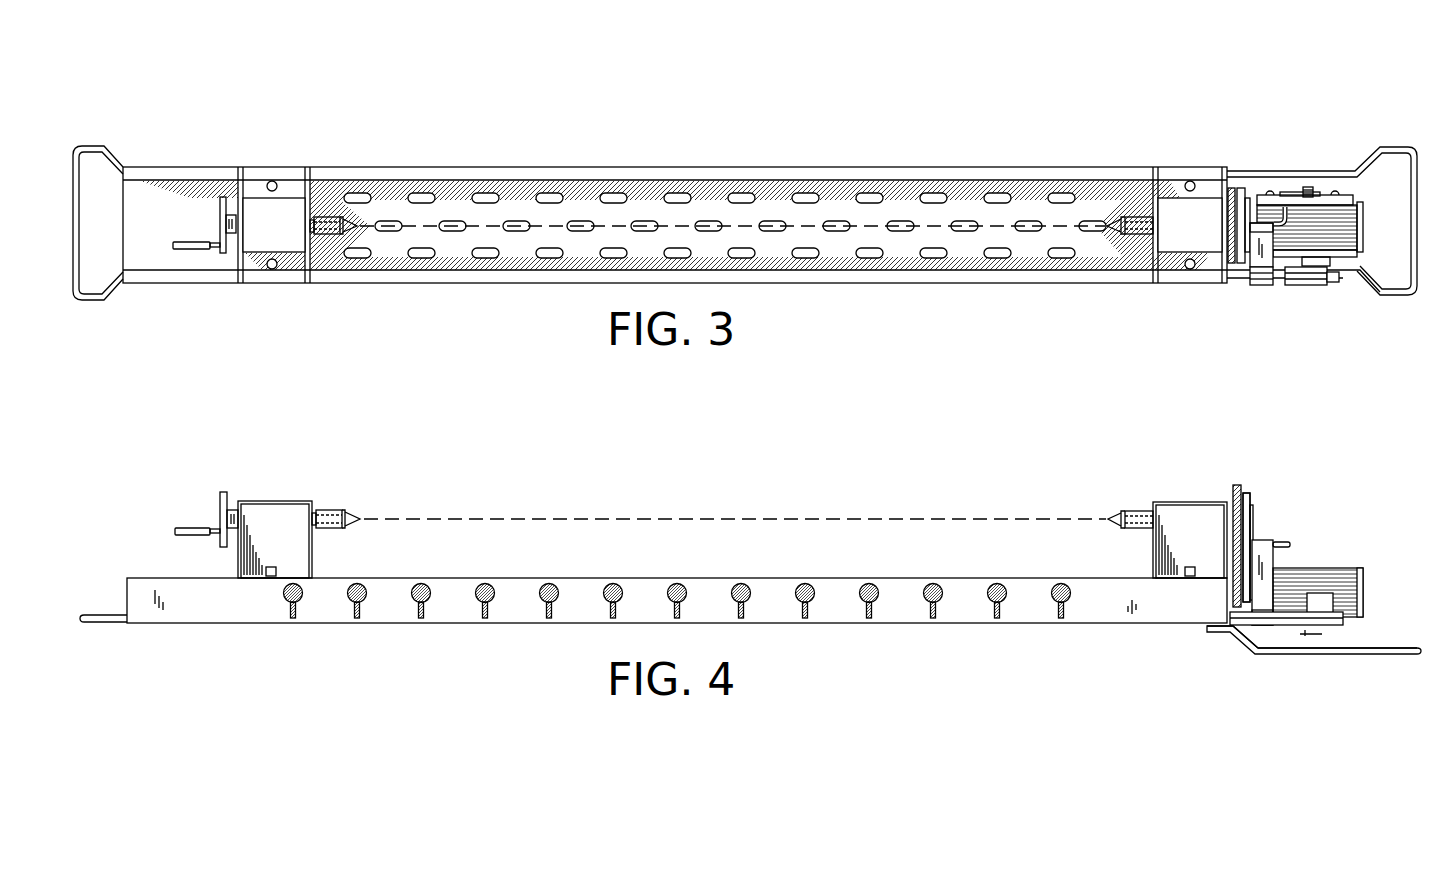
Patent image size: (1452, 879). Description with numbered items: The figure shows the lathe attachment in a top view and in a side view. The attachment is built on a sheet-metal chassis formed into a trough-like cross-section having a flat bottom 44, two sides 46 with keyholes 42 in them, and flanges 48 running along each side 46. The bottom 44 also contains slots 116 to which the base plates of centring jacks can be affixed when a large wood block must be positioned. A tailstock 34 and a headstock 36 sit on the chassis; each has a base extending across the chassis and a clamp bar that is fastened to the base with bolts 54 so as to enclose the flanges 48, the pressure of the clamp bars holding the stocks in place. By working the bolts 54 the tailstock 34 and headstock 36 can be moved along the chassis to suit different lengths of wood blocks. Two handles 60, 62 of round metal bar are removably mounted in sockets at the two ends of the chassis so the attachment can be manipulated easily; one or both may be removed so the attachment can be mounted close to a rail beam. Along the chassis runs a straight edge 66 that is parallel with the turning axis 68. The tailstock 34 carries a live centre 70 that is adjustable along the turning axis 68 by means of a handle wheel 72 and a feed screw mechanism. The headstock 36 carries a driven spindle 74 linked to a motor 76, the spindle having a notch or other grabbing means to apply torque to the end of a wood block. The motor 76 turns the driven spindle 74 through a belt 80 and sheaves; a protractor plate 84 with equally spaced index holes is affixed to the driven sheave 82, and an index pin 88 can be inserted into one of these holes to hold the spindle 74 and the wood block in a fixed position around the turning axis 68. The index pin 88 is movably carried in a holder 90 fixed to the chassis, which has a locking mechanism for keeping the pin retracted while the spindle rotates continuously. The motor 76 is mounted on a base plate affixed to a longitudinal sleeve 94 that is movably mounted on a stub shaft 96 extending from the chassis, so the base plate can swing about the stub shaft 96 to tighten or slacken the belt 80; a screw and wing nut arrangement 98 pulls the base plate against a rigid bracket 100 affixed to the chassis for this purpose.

In FIG. 3, the tailstock 34 is at (288, 196).
In FIG. 4, the tailstock 34 is at (280, 501).
In FIG. 3, the headstock 36 is at (1208, 193).
In FIG. 4, the headstock 36 is at (1188, 502).
In FIG. 4, the keyholes 42 is at (990, 593).
In FIG. 3, the flat bottom 44 is at (770, 210).
In FIG. 4, the sides 46 is at (390, 600).
In FIG. 3, the flanges 48 is at (562, 278).
In FIG. 3, the bolts 54 is at (266, 182).
In FIG. 3, the handle 60 is at (96, 145).
In FIG. 4, the handle 60 is at (100, 612).
In FIG. 3, the handle 62 is at (1396, 147).
In FIG. 4, the handle 62 is at (1373, 655).
In FIG. 3, the straight edge 66 is at (892, 168).
In FIG. 3, the turning axis 68 is at (992, 226).
In FIG. 4, the turning axis 68 is at (950, 519).
In FIG. 3, the live centre 70 is at (326, 212).
In FIG. 4, the live centre 70 is at (330, 510).
In FIG. 3, the handle wheel 72 is at (220, 217).
In FIG. 4, the handle wheel 72 is at (222, 500).
In FIG. 3, the driven spindle 74 is at (1133, 200).
In FIG. 4, the driven spindle 74 is at (1135, 512).
In FIG. 3, the motor 76 is at (1318, 215).
In FIG. 4, the motor 76 is at (1363, 578).
In FIG. 4, the belt 80 is at (1245, 485).
In FIG. 4, the driven sheave 82 is at (1246, 547).
In FIG. 4, the protractor plate 84 is at (1253, 513).
In FIG. 4, the index pin 88 is at (1282, 540).
In FIG. 3, the holder 90 is at (1262, 287).
In FIG. 4, the holder 90 is at (1275, 557).
In FIG. 3, the longitudinal sleeve 94 is at (1307, 287).
In FIG. 3, the stub shaft 96 is at (1333, 285).
In FIG. 4, the screw and wing nut arrangement 98 is at (1350, 634).
In FIG. 4, the rigid bracket 100 is at (1237, 634).
In FIG. 3, the slots 116 is at (677, 193).